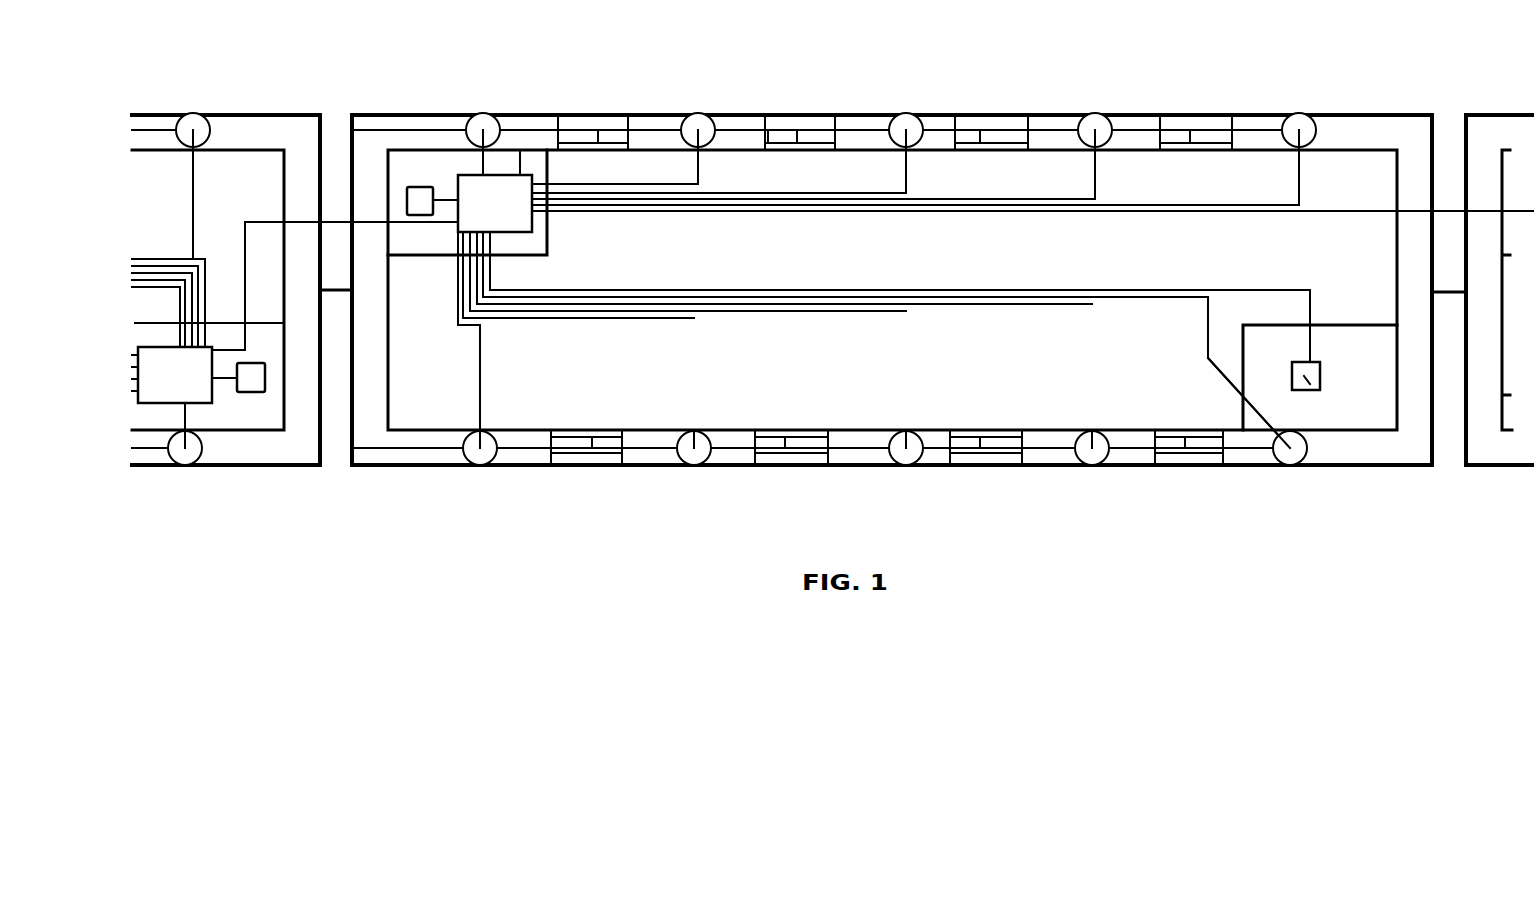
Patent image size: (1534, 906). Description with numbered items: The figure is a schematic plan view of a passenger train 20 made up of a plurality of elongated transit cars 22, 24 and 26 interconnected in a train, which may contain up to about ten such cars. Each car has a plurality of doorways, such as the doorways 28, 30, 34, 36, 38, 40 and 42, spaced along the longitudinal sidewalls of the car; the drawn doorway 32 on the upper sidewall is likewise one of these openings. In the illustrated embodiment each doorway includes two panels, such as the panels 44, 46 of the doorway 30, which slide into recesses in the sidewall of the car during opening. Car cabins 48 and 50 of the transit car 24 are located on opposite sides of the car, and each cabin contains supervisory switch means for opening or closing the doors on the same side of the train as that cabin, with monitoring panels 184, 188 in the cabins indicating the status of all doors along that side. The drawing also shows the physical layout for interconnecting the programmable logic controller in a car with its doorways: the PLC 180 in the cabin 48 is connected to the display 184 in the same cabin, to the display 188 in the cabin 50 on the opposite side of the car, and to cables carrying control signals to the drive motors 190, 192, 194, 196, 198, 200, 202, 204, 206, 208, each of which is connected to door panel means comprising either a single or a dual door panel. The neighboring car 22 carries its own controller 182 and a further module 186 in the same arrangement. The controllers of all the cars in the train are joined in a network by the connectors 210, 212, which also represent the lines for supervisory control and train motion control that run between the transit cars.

The passenger train 20 is at (376, 518).
The transit car 22 is at (246, 170).
The transit car 24 is at (1347, 168).
The transit car 26 is at (1452, 430).
The doorway 28 is at (600, 137).
The doorway 30 is at (808, 132).
The sensor 32 is at (990, 133).
The doorway 34 is at (1183, 130).
The doorway 36 is at (587, 447).
The doorway 38 is at (780, 447).
The doorway 40 is at (975, 447).
The doorway 42 is at (1198, 465).
The door panel 44 is at (773, 133).
The door panel 46 is at (820, 135).
The car cabin 48 is at (442, 170).
The car cabin 50 is at (1365, 407).
The PLC 180 is at (520, 187).
The programmable logic controller 182 is at (198, 395).
The monitoring panel 184 is at (418, 200).
The input/output module 186 is at (255, 383).
The monitoring panel 188 is at (1308, 380).
The drive motor 190 is at (488, 125).
The drive motor 192 is at (704, 126).
The drive motor 194 is at (913, 128).
The drive motor 196 is at (1100, 122).
The drive motor 198 is at (1296, 120).
The drive motor 200 is at (465, 450).
The drive motor 202 is at (680, 450).
The drive motor 204 is at (891, 450).
The drive motor 206 is at (1076, 450).
The drive motor 208 is at (1287, 452).
The connector 210 is at (343, 222).
The connector 212 is at (1443, 207).